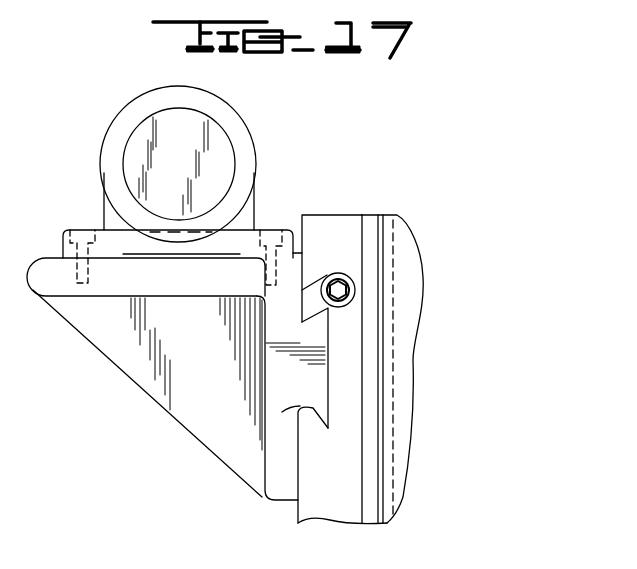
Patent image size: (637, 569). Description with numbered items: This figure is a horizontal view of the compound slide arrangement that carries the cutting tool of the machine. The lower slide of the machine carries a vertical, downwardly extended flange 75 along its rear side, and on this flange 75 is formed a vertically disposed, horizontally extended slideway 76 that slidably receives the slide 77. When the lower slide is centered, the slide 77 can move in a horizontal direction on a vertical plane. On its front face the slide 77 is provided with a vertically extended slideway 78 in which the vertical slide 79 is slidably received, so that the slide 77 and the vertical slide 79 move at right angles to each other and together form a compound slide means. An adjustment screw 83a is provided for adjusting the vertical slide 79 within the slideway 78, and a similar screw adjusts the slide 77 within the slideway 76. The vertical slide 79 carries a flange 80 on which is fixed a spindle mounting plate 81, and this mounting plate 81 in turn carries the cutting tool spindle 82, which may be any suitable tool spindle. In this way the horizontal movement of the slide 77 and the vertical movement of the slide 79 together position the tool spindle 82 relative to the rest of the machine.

The flange 75 is at (402, 390).
The slideway 76 is at (390, 246).
The slide 77 is at (338, 223).
The slideway 78 is at (300, 407).
The vertical slide 79 is at (280, 385).
The flange 80 is at (102, 283).
The spindle mounting plate 81 is at (117, 237).
The cutting tool spindle 82 is at (144, 108).
The adjustment screw 83a is at (352, 292).